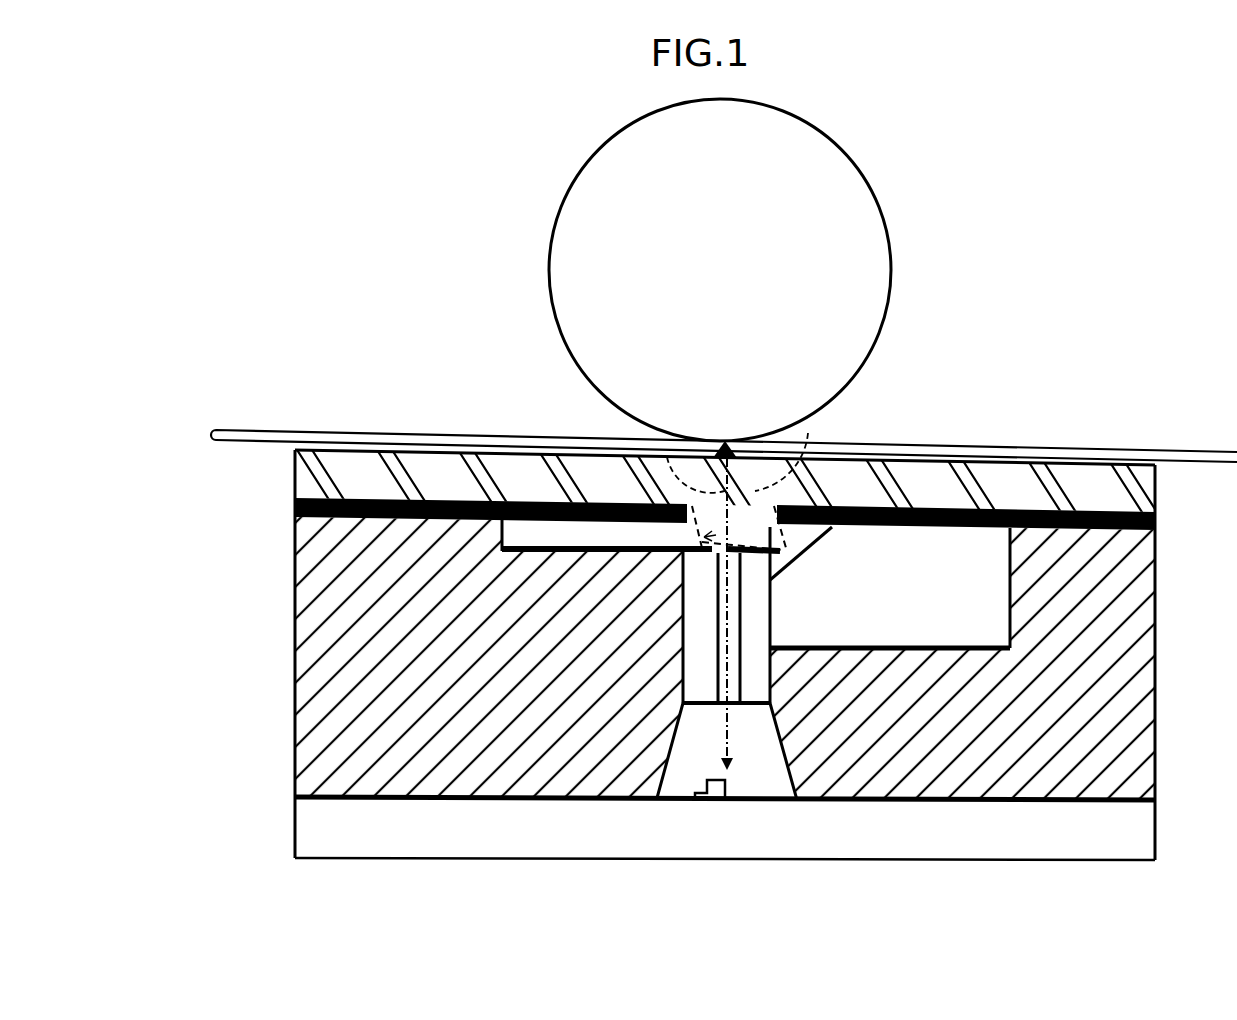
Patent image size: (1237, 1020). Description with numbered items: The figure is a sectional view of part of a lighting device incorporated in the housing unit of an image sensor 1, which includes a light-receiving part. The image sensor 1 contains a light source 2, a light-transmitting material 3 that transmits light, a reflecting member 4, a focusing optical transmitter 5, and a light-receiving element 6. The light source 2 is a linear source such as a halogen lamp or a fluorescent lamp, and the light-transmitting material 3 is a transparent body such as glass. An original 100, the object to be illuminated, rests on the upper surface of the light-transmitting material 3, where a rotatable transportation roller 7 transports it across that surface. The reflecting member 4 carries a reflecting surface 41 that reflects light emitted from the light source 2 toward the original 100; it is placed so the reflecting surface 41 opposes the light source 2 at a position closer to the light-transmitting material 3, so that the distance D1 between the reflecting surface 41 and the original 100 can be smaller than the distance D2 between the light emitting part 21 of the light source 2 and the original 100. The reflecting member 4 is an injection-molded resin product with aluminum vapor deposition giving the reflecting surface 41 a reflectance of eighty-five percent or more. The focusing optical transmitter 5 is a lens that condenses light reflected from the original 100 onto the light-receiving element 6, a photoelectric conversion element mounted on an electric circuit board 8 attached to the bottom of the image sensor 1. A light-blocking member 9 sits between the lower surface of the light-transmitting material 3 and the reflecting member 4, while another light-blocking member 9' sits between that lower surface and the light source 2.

The image sensor 1 is at (268, 572).
The light source 2 is at (990, 578).
The light-transmitting material 3 is at (1143, 487).
The reflecting member 4 is at (582, 533).
The focusing optical transmitter 5 is at (757, 708).
The light-receiving element 6 is at (697, 793).
The transportation roller 7 is at (582, 201).
The electric circuit board 8 is at (1027, 848).
The light-blocking member 9 is at (444, 430).
The light-blocking member 9' is at (907, 483).
The light emitting part 21 is at (786, 550).
The reflecting surface 41 is at (672, 550).
The original 100 is at (1133, 447).
The distance D1 is at (656, 433).
The distance D2 is at (825, 427).